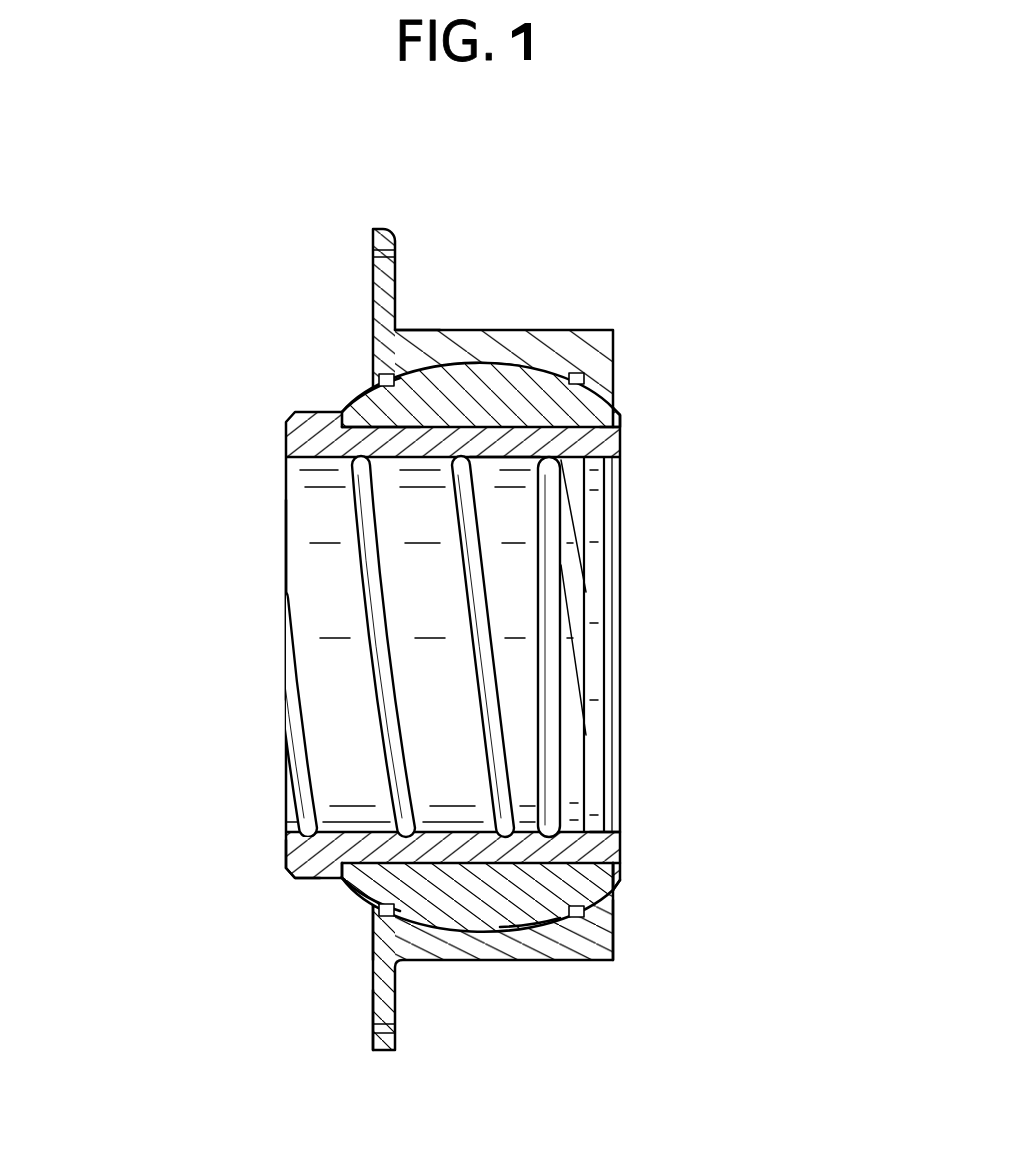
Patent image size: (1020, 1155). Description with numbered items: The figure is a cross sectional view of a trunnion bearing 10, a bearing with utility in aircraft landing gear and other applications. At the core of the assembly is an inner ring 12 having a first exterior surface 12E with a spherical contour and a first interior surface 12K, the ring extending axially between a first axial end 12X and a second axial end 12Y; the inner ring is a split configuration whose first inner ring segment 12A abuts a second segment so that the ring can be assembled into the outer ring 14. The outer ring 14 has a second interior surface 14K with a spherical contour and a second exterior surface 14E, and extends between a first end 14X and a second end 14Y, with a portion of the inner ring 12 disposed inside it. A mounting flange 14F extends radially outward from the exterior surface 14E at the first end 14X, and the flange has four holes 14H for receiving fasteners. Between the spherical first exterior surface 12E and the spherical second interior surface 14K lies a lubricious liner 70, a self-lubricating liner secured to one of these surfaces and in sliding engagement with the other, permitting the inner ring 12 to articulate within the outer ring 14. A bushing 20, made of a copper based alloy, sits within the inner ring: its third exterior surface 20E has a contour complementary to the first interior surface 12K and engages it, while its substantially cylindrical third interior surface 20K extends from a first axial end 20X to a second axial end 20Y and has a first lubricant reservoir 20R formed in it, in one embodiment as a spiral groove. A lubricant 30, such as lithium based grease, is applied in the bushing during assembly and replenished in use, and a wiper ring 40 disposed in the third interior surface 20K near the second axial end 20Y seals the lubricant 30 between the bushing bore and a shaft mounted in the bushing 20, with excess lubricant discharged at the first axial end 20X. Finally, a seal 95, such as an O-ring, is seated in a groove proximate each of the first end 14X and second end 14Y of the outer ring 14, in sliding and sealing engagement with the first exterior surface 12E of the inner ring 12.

The trunnion bearing 10 is at (731, 221).
The inner ring 12 is at (357, 412).
The first inner ring segment 12A is at (372, 878).
The first exterior surface 12E is at (377, 394).
The first interior surface 12K is at (395, 430).
The first axial end 12X is at (342, 879).
The second axial end 12Y is at (623, 877).
The outer ring 14 is at (533, 346).
The second exterior surface 14E is at (413, 329).
The mounting flange 14F is at (377, 1010).
The holes 14H is at (372, 252).
The second interior surface 14K is at (452, 378).
The first end 14X is at (372, 918).
The second end 14Y is at (615, 942).
The bushing 20 is at (307, 847).
The third exterior surface 20E is at (620, 422).
The third interior surface 20K is at (493, 507).
The first lubricant reservoir 20R is at (470, 565).
The first axial end 20X is at (287, 863).
The second axial end 20Y is at (622, 847).
The lubricant 30 is at (487, 667).
The wiper ring 40 is at (595, 740).
The lubricious liner 70 is at (537, 927).
The seal 95 is at (382, 373).